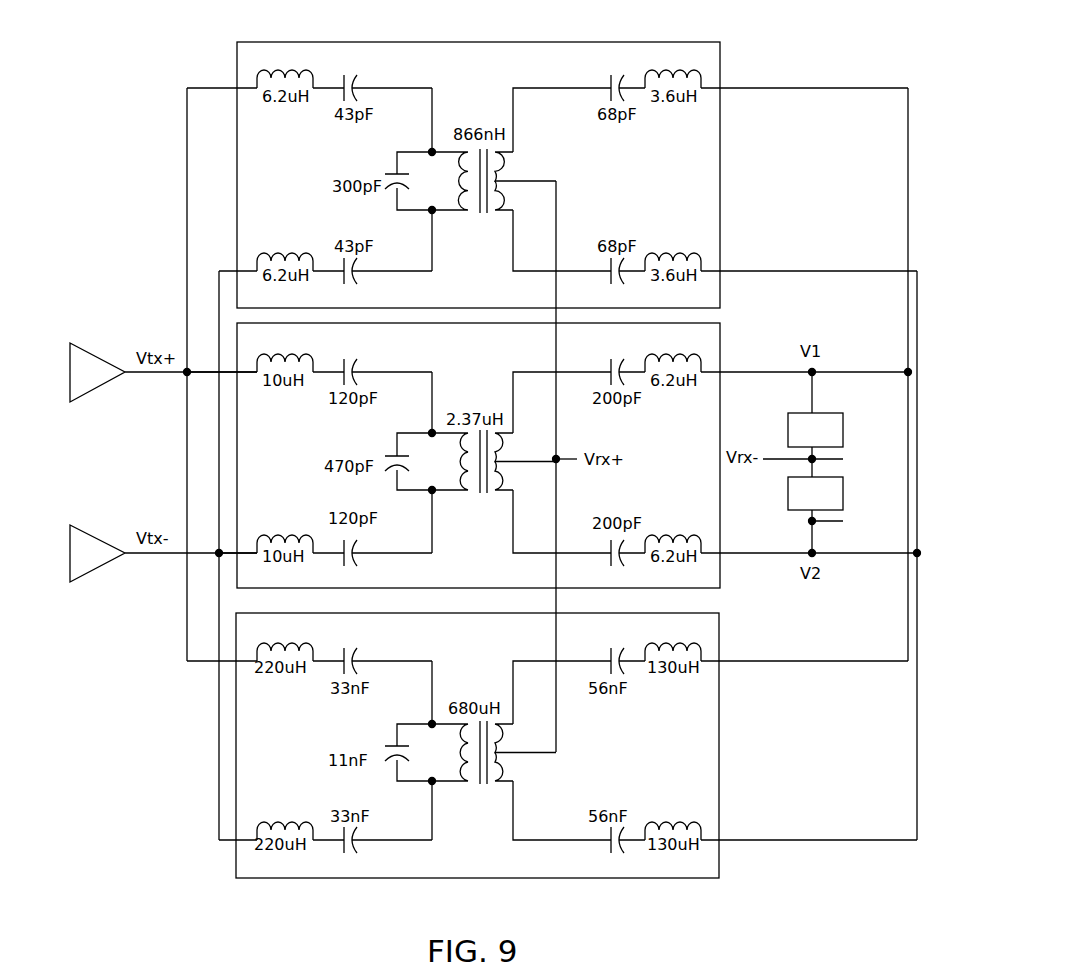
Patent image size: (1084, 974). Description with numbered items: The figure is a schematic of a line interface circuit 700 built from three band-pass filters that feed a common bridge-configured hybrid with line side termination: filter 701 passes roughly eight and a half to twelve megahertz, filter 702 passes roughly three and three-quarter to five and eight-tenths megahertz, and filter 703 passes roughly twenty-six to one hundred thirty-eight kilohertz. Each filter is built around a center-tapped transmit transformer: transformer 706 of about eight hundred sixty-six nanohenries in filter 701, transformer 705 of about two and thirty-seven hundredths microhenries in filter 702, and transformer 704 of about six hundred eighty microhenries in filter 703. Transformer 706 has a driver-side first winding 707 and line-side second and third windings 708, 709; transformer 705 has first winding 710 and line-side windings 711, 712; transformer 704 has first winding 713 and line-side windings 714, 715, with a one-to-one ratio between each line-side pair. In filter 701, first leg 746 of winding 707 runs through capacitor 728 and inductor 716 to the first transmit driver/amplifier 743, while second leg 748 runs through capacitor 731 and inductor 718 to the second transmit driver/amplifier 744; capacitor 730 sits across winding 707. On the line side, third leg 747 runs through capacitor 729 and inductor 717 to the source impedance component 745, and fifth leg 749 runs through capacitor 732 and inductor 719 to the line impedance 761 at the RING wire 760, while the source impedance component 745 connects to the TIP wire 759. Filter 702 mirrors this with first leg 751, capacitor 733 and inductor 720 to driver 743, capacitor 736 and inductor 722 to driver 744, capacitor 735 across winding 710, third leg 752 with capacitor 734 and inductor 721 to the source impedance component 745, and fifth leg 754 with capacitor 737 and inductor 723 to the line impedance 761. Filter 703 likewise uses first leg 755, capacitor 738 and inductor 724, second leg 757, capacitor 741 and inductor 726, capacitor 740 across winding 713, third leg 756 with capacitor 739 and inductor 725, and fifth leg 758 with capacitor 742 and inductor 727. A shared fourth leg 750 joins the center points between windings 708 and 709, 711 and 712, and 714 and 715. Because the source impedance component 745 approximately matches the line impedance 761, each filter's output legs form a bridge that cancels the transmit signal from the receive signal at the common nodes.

The line interface circuit 700 is at (185, 783).
The filter 701 is at (724, 44).
The filter 702 is at (724, 324).
The filter 703 is at (724, 613).
The transmit transformer 704 is at (494, 762).
The transmit transformer 705 is at (494, 471).
The transmit transformer 706 is at (494, 190).
The first winding 707 is at (450, 181).
The second winding 708 is at (525, 166).
The third winding 709 is at (513, 195).
The first winding 710 is at (450, 461).
The second winding 711 is at (525, 447).
The third winding 712 is at (513, 476).
The first winding 713 is at (450, 752).
The second winding 714 is at (525, 738).
The third winding 715 is at (513, 767).
The inductor 716 is at (285, 68).
The inductor 717 is at (673, 65).
The inductor 718 is at (285, 277).
The inductor 719 is at (673, 277).
The inductor 720 is at (285, 352).
The inductor 721 is at (673, 349).
The inductor 722 is at (285, 558).
The inductor 723 is at (673, 558).
The inductor 724 is at (285, 641).
The inductor 725 is at (673, 639).
The inductor 726 is at (285, 846).
The inductor 727 is at (673, 846).
The capacitor 728 is at (348, 80).
The capacitor 729 is at (613, 80).
The capacitor 730 is at (387, 181).
The capacitor 731 is at (353, 279).
The capacitor 732 is at (613, 279).
The capacitor 733 is at (348, 363).
The capacitor 734 is at (613, 363).
The capacitor 735 is at (385, 461).
The capacitor 736 is at (348, 561).
The capacitor 737 is at (613, 561).
The capacitor 738 is at (348, 651).
The capacitor 739 is at (620, 651).
The capacitor 740 is at (384, 752).
The capacitor 741 is at (348, 851).
The capacitor 742 is at (613, 851).
The first transmit driver/amplifier 743 is at (163, 369).
The second transmit driver/amplifier 744 is at (163, 550).
The impedance component Zsrc 745 is at (831, 409).
The first leg 746 is at (410, 106).
The third leg 747 is at (562, 106).
The second leg 748 is at (412, 253).
The fifth leg 749 is at (562, 253).
The fourth leg 750 is at (570, 466).
The first leg 751 is at (411, 390).
The third leg 752 is at (562, 390).
The fifth leg 754 is at (562, 534).
The first leg 755 is at (410, 680).
The third leg 756 is at (562, 681).
The second leg 757 is at (412, 823).
The fifth leg 758 is at (501, 677).
The TIP wire 759 is at (831, 462).
The RING wire 760 is at (862, 526).
The line impedance Zline 761 is at (831, 493).